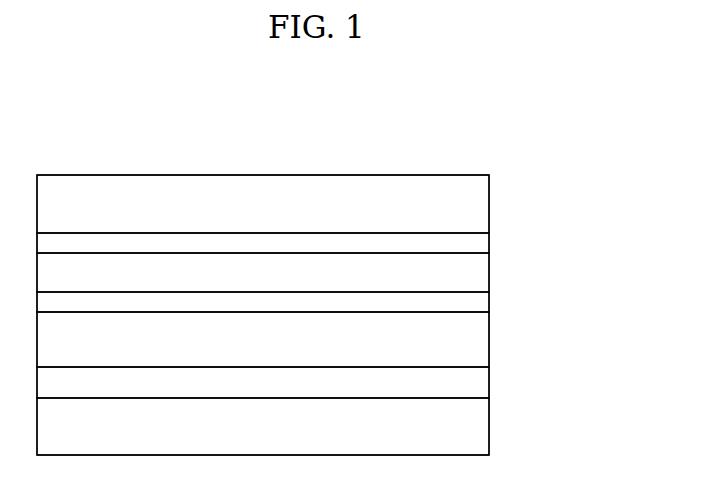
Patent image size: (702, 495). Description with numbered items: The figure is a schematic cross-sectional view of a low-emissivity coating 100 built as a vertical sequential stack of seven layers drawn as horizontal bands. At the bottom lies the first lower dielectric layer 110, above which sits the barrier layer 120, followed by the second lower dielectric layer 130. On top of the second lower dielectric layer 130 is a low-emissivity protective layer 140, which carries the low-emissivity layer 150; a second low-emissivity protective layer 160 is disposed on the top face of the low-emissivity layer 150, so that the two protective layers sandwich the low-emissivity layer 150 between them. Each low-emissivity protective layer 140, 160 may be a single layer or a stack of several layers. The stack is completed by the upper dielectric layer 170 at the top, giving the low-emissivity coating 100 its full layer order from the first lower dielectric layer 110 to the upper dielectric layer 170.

The low-emissivity coating 100 is at (100, 143).
The first lower dielectric layer 110 is at (490, 427).
The barrier layer 120 is at (490, 383).
The second lower dielectric layer 130 is at (490, 338).
The low-emissivity protective layer 140 is at (490, 302).
The low-emissivity layer 150 is at (490, 270).
The low-emissivity protective layer 160 is at (490, 242).
The upper dielectric layer 170 is at (490, 202).